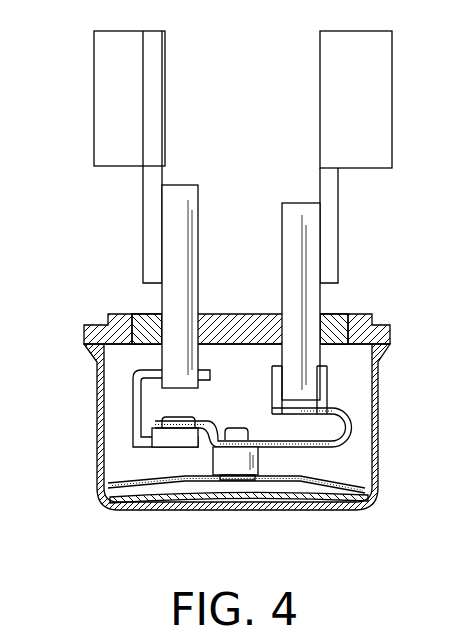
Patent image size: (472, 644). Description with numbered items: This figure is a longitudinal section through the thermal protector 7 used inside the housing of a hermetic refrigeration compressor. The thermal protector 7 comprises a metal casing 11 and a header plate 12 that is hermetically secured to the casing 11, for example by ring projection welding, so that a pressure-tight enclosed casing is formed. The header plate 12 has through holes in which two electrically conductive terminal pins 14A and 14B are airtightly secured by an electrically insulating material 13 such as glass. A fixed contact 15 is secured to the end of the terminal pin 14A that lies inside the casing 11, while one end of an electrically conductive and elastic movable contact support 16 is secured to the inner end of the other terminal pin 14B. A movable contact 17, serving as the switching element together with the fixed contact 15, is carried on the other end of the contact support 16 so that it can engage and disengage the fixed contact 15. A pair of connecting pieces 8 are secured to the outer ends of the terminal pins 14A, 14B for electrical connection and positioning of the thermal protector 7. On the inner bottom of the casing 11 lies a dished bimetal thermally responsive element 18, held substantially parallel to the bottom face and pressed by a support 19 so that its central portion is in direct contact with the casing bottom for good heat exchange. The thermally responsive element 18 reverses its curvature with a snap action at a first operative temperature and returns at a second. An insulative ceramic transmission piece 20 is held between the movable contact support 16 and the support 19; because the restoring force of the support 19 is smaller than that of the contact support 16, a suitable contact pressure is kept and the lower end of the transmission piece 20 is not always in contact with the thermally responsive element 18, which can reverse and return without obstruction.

The thermal protector 7 is at (98, 513).
The connecting pieces 8 is at (104, 96).
The metal casing 11 is at (380, 383).
The header plate 12 is at (370, 313).
The electrically insulating material 13 is at (138, 318).
The terminal pin 14A is at (193, 190).
The terminal pin 14B is at (338, 203).
The fixed contact 15 is at (133, 400).
The movable contact support 16 is at (348, 432).
The movable contact 17 is at (158, 432).
The thermally responsive element 18 is at (340, 508).
The support 19 is at (186, 487).
The transmission piece 20 is at (258, 478).